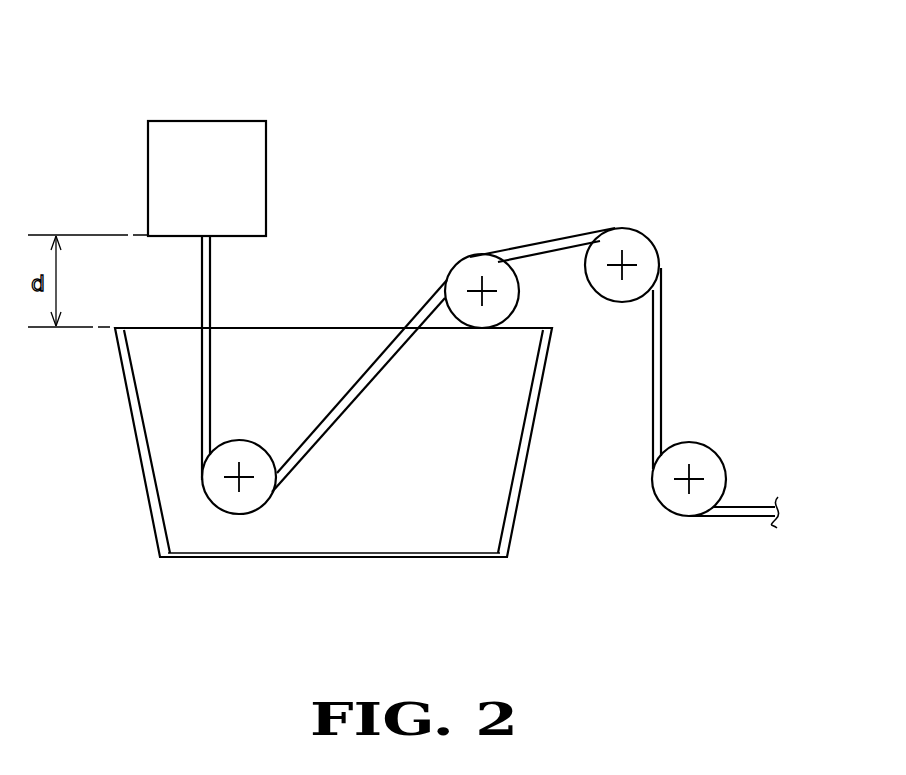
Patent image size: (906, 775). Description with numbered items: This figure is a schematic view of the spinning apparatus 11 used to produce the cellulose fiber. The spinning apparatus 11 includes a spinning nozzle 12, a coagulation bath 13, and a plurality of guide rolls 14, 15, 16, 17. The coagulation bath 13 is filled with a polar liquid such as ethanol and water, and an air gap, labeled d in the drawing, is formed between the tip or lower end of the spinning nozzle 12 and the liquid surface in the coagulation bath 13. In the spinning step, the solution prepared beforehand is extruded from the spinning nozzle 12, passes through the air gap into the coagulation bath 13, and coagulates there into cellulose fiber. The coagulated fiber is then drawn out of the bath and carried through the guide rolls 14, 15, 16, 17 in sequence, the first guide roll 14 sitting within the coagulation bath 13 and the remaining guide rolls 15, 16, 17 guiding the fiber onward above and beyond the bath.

The spinning apparatus 11 is at (598, 117).
The spinning nozzle 12 is at (242, 190).
The coagulation bath 13 is at (180, 527).
The guide roll 14 is at (236, 515).
The guide roll 15 is at (456, 257).
The guide roll 16 is at (660, 250).
The guide roll 17 is at (727, 466).